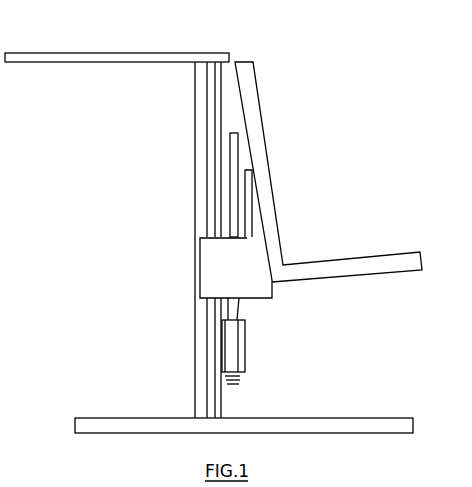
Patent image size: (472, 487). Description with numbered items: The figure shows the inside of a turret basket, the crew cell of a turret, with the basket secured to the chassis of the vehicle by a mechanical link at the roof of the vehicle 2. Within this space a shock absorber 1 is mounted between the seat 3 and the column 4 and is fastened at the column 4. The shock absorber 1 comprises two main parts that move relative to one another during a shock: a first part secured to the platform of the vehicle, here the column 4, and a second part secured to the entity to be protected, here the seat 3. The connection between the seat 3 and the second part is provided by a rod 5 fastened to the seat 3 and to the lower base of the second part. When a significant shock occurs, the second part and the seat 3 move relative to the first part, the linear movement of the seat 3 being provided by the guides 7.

The shock absorber 1 is at (214, 333).
The roof of the vehicle 2 is at (127, 58).
The seat 3 is at (270, 178).
The column 4 is at (222, 115).
The rod 5 is at (233, 183).
The guides 7 is at (218, 247).